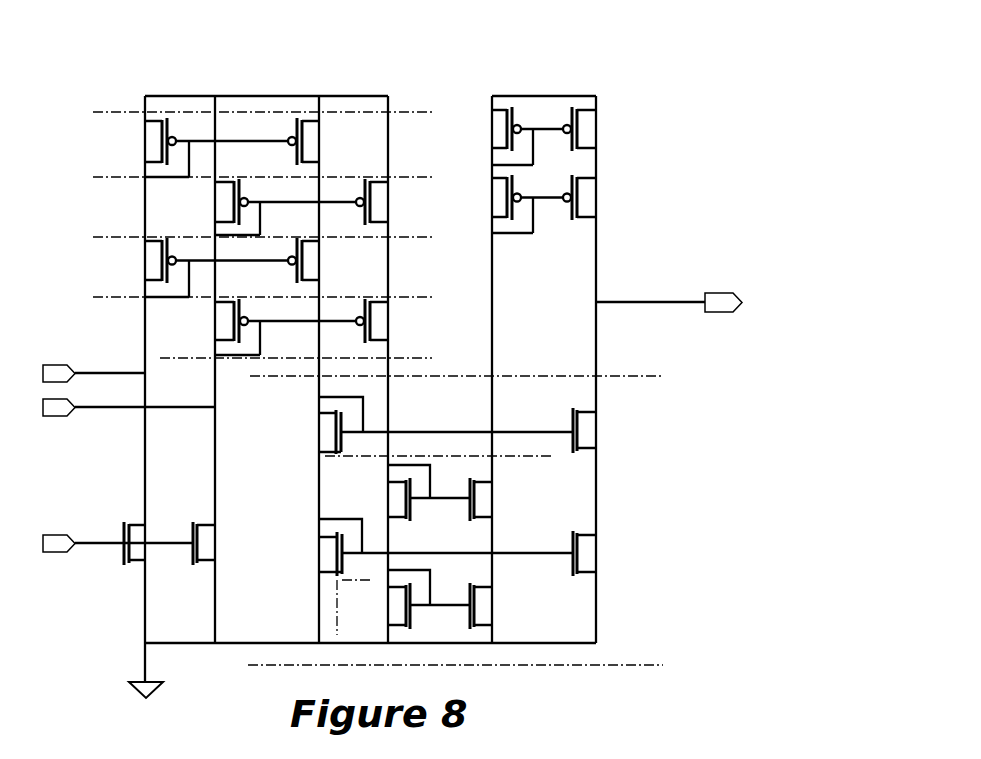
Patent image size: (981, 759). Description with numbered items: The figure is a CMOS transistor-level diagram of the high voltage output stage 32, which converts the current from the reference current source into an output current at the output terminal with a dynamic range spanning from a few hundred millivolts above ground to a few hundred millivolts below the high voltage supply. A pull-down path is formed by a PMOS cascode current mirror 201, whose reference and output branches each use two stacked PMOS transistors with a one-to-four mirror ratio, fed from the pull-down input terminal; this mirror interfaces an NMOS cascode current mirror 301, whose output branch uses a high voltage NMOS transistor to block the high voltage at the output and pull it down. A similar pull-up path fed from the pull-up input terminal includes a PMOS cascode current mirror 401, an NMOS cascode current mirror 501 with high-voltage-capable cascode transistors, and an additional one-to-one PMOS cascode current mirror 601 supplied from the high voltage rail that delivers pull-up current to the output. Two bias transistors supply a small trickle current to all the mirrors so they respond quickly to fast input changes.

The high voltage output stage 32 is at (733, 81).
The PMOS cascode current mirror 201 is at (93, 200).
The NMOS cascode current mirror 301 is at (665, 468).
The PMOS cascode current mirror 401 is at (430, 282).
The NMOS cascode current mirror 501 is at (488, 663).
The PMOS cascode current mirror 601 is at (628, 158).